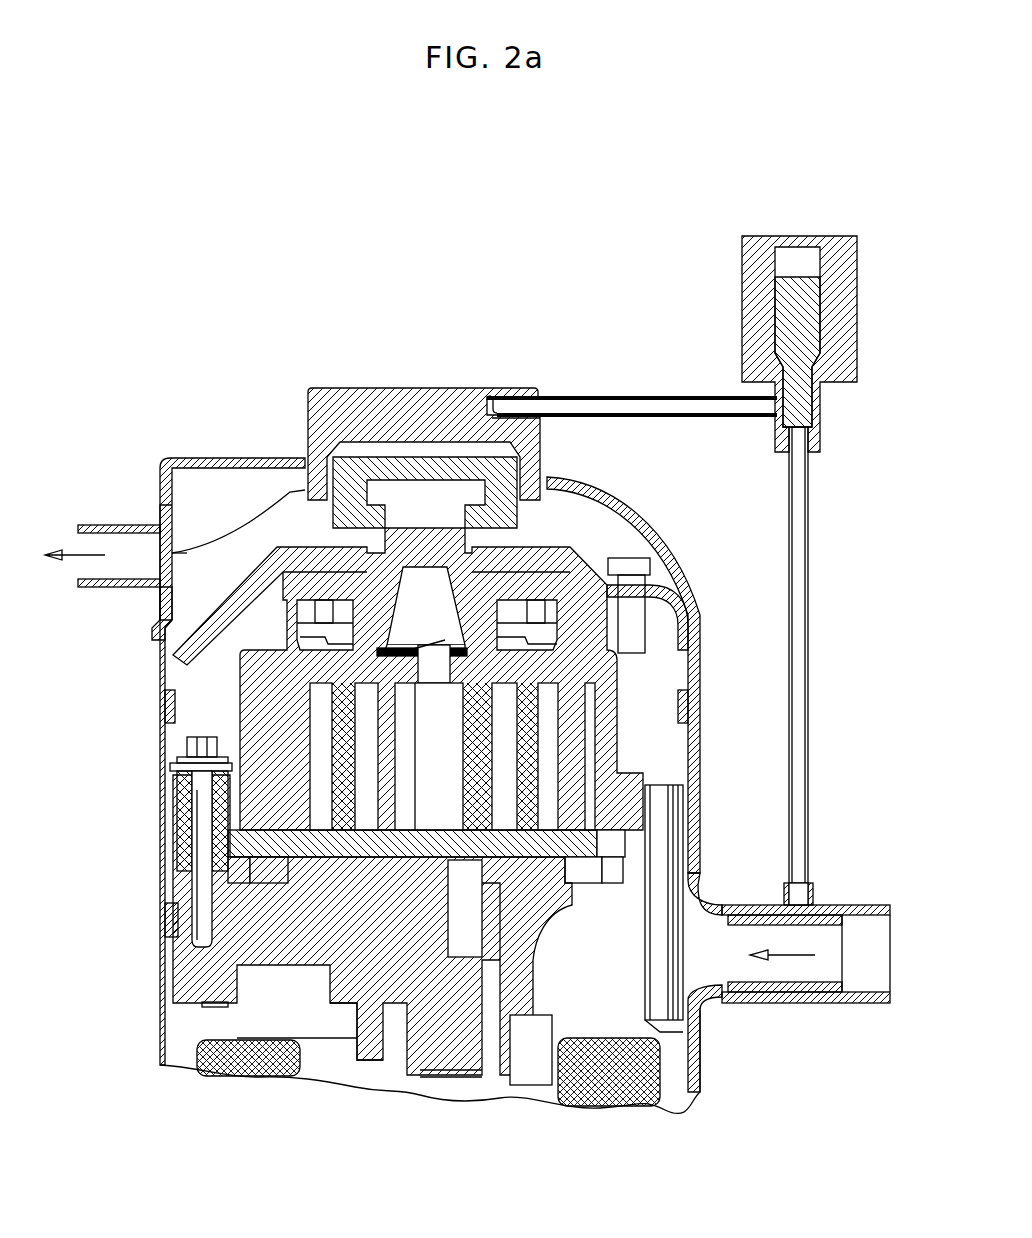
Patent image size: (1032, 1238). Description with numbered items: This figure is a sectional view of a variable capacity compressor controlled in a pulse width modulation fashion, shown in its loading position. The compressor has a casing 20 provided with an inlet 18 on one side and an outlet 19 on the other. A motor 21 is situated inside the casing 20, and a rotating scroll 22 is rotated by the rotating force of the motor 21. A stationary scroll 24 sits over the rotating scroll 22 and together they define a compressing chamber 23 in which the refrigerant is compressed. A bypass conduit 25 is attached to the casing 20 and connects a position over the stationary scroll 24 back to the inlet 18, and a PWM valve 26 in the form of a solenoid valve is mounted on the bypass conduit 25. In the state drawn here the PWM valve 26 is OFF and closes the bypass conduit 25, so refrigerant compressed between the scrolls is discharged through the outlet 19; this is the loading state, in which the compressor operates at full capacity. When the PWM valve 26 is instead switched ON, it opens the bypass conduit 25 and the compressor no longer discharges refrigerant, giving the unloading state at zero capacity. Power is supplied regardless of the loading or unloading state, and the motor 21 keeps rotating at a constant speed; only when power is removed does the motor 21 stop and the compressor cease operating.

The inlet 18 is at (840, 905).
The outlet 19 is at (103, 525).
The casing 20 is at (160, 900).
The motor 21 is at (235, 1040).
The rotating scroll 22 is at (237, 848).
The compressing chamber 23 is at (312, 797).
The stationary scroll 24 is at (253, 710).
The bypass conduit 25 is at (810, 497).
The PWM valve 26 is at (847, 305).